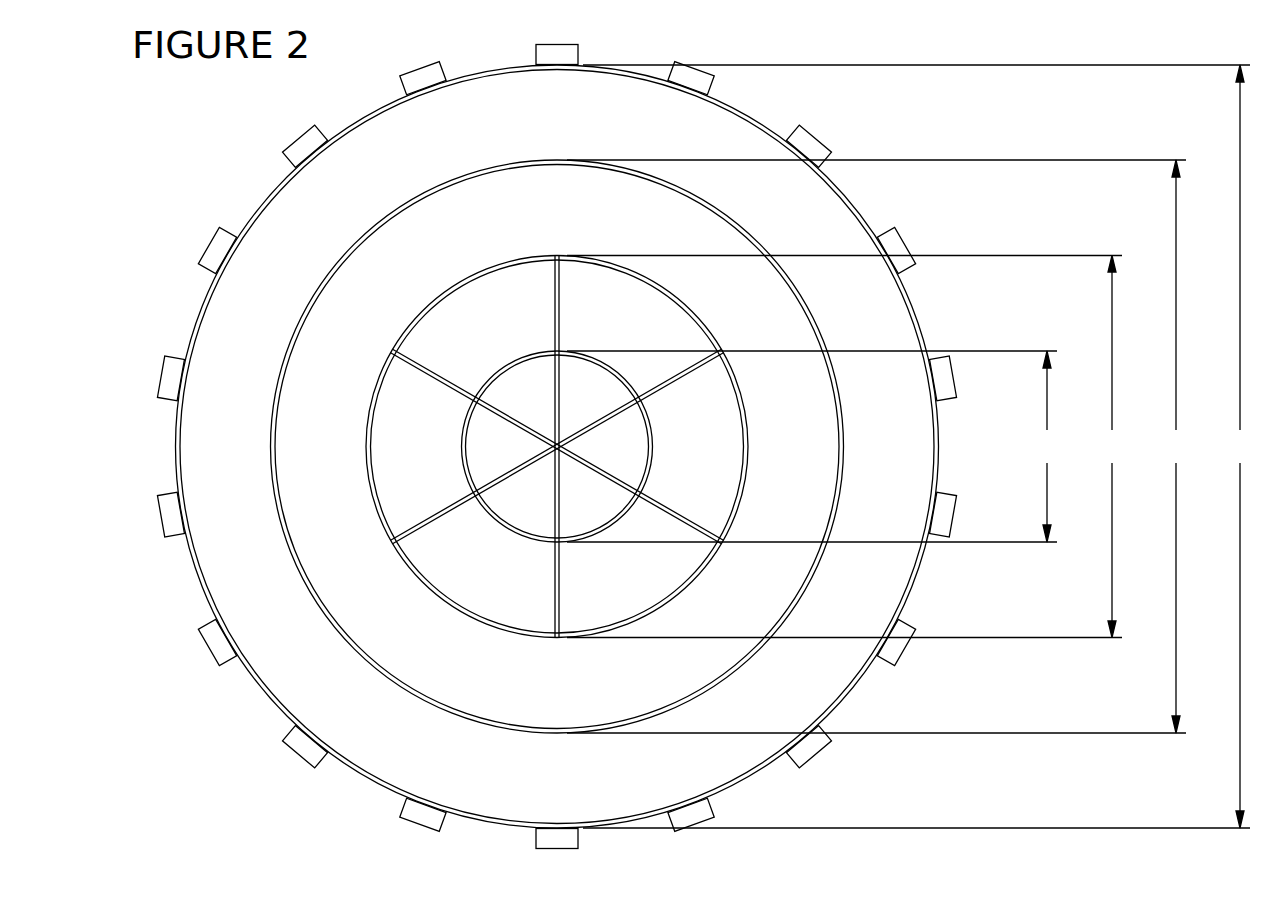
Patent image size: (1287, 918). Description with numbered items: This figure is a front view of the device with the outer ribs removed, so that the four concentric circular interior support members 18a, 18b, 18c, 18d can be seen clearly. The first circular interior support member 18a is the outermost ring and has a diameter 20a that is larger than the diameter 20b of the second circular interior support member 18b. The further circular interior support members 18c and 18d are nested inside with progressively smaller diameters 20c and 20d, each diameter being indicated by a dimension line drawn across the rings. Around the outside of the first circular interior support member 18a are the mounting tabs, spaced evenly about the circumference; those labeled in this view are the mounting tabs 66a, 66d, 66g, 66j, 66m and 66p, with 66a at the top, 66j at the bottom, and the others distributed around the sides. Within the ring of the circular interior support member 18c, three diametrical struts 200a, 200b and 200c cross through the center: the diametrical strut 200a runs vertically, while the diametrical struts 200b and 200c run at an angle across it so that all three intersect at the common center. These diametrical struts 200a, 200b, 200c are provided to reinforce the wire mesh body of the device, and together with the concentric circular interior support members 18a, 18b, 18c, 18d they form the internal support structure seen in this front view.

The first circular interior support member 18a is at (357, 123).
The second circular interior support member 18b is at (405, 203).
The circular interior support member 18c is at (455, 288).
The circular interior support member 18d is at (512, 365).
The diametrical strut 200a is at (553, 575).
The diametrical strut 200b is at (470, 497).
The diametrical strut 200c is at (467, 397).
The mounting tab 66a is at (546, 52).
The mounting tab 66d is at (897, 245).
The mounting tab 66g is at (897, 648).
The mounting tab 66j is at (543, 838).
The mounting tab 66m is at (218, 650).
The mounting tab 66p is at (218, 243).
The diameter 20a is at (924, 446).
The diameter 20b is at (885, 446).
The diameter 20c is at (852, 447).
The diameter 20d is at (820, 446).